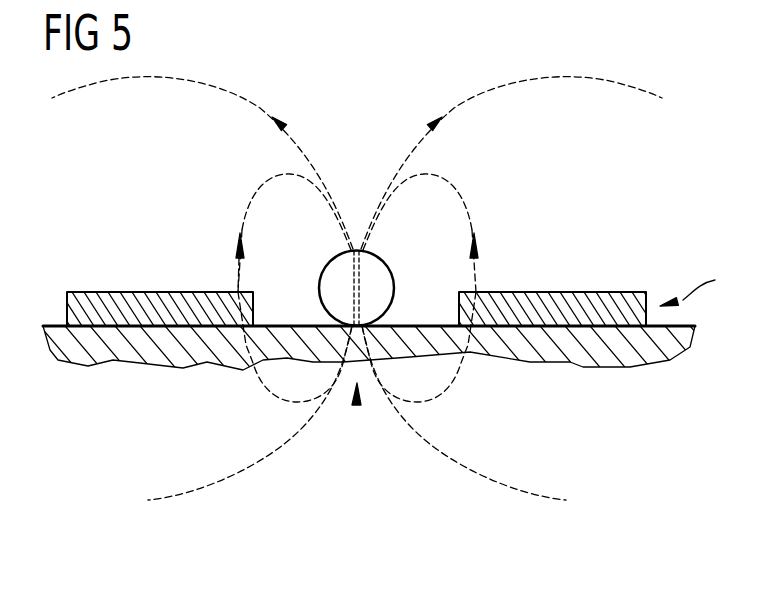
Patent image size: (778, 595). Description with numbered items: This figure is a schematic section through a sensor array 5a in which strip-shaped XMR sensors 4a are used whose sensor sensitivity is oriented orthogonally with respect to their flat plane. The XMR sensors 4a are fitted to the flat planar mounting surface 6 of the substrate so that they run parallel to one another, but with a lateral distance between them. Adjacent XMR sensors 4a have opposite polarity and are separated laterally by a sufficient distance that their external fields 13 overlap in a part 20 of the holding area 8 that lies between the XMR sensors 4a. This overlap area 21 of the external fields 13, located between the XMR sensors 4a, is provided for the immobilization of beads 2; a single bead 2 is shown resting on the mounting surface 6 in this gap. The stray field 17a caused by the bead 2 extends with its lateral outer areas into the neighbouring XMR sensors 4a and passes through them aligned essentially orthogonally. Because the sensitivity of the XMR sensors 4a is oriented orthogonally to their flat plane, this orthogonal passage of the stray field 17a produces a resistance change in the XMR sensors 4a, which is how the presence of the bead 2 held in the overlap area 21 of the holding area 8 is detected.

The bead 2 is at (384, 287).
The XMR sensor 4a is at (125, 296).
The sensor array 5a is at (701, 284).
The mounting surface 6 is at (306, 318).
The holding area 8 is at (277, 228).
The external field 13 is at (195, 497).
The stray field 17a is at (251, 215).
The part of the holding area 20 is at (239, 276).
The overlap area 21 is at (354, 405).